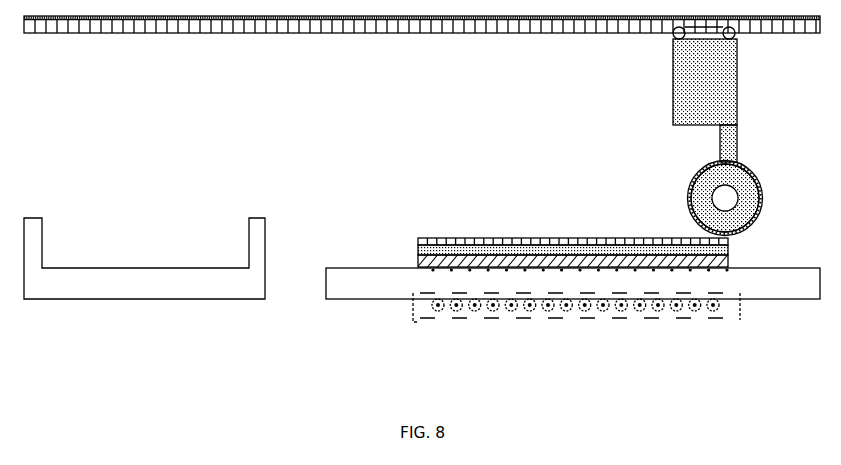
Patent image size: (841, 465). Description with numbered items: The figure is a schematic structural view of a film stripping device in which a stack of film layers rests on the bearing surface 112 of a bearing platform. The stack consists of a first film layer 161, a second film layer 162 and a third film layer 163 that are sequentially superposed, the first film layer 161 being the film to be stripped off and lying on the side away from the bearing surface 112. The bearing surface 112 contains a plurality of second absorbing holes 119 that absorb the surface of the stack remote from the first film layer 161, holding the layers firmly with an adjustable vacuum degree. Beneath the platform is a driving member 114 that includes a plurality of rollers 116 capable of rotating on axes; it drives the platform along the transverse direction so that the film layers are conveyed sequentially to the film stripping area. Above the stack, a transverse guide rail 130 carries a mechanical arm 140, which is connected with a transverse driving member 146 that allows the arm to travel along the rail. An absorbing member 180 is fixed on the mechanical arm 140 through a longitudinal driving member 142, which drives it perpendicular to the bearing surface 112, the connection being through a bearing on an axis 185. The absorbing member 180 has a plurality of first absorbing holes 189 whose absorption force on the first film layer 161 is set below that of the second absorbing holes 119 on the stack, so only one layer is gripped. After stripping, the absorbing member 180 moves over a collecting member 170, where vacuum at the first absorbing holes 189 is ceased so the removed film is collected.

The bearing surface 112 is at (390, 266).
The driving member 114 is at (420, 318).
The rollers 116 is at (677, 308).
The second absorbing holes 119 is at (432, 268).
The transverse guide rail 130 is at (422, 25).
The mechanical arm 140 is at (675, 108).
The longitudinal driving member 142 is at (740, 140).
The transverse driving member 146 is at (733, 36).
The first film layer 161 is at (495, 245).
The second film layer 162 is at (567, 242).
The third film layer 163 is at (705, 258).
The collecting member 170 is at (158, 283).
The absorbing member 180 is at (718, 202).
The axis 185 is at (742, 166).
The first absorbing holes 189 is at (745, 230).